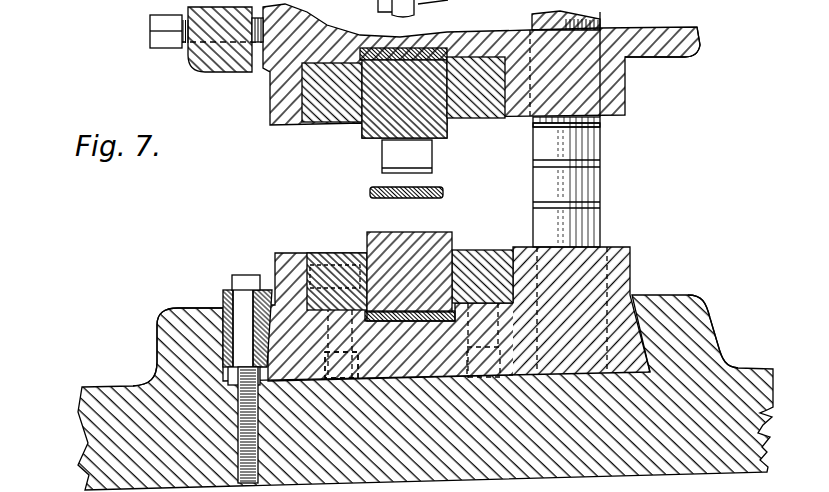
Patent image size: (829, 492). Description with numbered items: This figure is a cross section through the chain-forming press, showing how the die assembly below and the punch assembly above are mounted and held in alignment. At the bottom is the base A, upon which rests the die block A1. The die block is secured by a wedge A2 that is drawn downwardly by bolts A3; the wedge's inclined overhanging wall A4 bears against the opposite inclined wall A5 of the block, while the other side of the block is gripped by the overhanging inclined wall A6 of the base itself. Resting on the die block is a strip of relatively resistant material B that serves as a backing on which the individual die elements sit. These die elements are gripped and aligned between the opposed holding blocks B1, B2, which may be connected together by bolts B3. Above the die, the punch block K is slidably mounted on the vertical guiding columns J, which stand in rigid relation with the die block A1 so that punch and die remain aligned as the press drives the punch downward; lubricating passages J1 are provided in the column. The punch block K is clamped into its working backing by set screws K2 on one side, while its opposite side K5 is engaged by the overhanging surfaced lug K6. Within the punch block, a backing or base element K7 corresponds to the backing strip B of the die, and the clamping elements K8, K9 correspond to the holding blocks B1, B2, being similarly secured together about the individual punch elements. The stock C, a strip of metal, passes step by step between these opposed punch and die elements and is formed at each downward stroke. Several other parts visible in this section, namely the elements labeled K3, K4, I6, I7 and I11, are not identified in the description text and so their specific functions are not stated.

The punch block K is at (618, 90).
The set screws K2 is at (150, 25).
The adjusting screw block K3 is at (196, 57).
The threaded stem K4 is at (259, 70).
The opposite side of punch block K5 is at (602, 29).
The overhanging surfaced lug K6 is at (690, 40).
The backing or base element K7 is at (424, 48).
The clamping element K8 is at (318, 118).
The clamping element K9 is at (478, 118).
The lower die block I6 is at (433, 232).
The upper die I7 is at (428, 138).
The die guide I11 is at (382, 152).
The vertical guiding column J is at (600, 182).
The lubricating passages J1 is at (553, 130).
The stock C is at (370, 192).
The strip of relatively resistant material B is at (423, 322).
The holding block B1 is at (318, 253).
The holding block B2 is at (502, 250).
The bolts B3 is at (358, 253).
The base A is at (107, 395).
The die block A1 is at (622, 258).
The wedge A2 is at (222, 301).
The bolts A3 is at (240, 298).
The inclined overhanging wall A4 is at (255, 291).
The inclined wall of the block A5 is at (270, 340).
The overhanging inclined wall of the base A6 is at (640, 318).